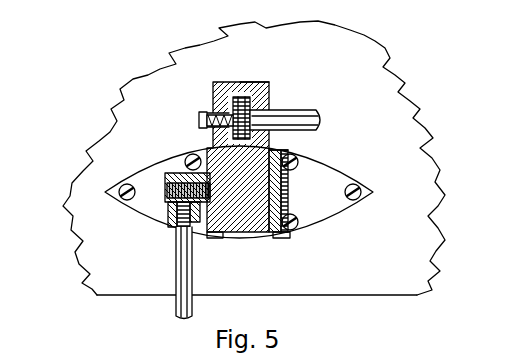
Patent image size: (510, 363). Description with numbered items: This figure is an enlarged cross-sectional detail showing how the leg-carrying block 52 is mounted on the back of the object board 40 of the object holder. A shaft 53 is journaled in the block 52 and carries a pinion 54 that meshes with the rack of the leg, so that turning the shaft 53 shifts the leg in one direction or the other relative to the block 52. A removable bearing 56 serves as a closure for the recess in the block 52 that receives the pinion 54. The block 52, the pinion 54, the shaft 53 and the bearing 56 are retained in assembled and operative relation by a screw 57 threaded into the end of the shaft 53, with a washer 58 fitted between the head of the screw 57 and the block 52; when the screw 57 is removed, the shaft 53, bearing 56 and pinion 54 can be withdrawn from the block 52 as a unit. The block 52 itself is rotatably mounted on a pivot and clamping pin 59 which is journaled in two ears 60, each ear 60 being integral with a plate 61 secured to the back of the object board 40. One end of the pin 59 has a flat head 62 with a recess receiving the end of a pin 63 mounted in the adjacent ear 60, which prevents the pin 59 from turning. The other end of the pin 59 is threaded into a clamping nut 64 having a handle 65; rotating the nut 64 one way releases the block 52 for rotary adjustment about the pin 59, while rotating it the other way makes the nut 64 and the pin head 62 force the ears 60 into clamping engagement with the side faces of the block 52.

The object board 40 is at (354, 286).
The block 52 is at (259, 82).
The shaft 53 is at (314, 110).
The pinion 54 is at (239, 82).
The bearing 56 is at (270, 99).
The screw 57 is at (200, 119).
The washer 58 is at (211, 110).
The pivot and clamping pin 59 is at (218, 238).
The ears 60 is at (206, 152).
The plate 61 is at (146, 168).
The flat head 62 is at (285, 181).
The pin 63 is at (269, 148).
The clamping nut 64 is at (170, 214).
The handle 65 is at (180, 283).